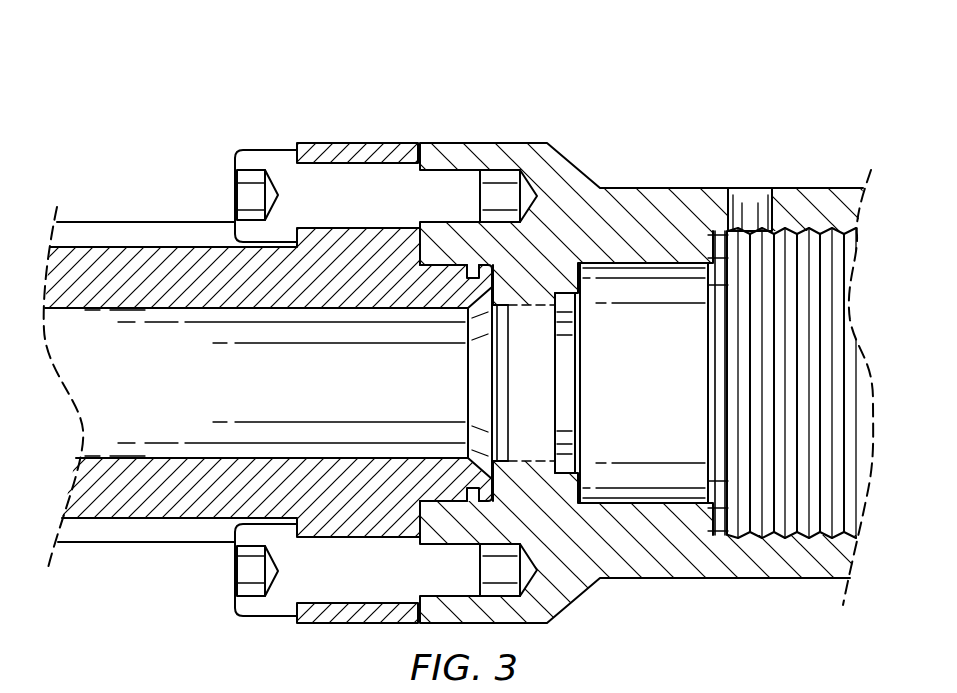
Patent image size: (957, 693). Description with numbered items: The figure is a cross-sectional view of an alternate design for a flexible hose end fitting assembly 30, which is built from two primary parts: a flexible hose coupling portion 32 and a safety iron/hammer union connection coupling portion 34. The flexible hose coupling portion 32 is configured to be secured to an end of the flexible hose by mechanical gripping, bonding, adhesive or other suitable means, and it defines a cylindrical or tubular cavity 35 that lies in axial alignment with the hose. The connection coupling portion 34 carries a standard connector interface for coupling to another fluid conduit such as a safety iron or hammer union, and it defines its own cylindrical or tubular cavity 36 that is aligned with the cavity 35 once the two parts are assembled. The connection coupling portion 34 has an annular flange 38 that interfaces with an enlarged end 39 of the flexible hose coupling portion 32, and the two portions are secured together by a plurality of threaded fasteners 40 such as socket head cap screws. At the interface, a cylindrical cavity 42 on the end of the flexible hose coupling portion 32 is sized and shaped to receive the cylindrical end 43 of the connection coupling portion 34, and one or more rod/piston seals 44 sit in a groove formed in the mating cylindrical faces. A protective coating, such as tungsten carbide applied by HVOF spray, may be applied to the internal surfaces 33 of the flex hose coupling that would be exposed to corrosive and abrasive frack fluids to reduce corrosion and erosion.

The flexible hose end fitting assembly 30 is at (668, 86).
The flexible hose coupling portion 32 is at (693, 188).
The internal surfaces 33 is at (550, 300).
The connection coupling portion 34 is at (137, 222).
The cylindrical cavity 35 is at (649, 394).
The cylindrical cavity 36 is at (257, 394).
The annular flange 38 is at (349, 143).
The enlarged end 39 is at (478, 143).
The threaded fasteners 40 is at (256, 150).
The cylindrical cavity 42 is at (493, 473).
The cylindrical end 43 is at (452, 488).
The rod/piston seals 44 is at (468, 272).